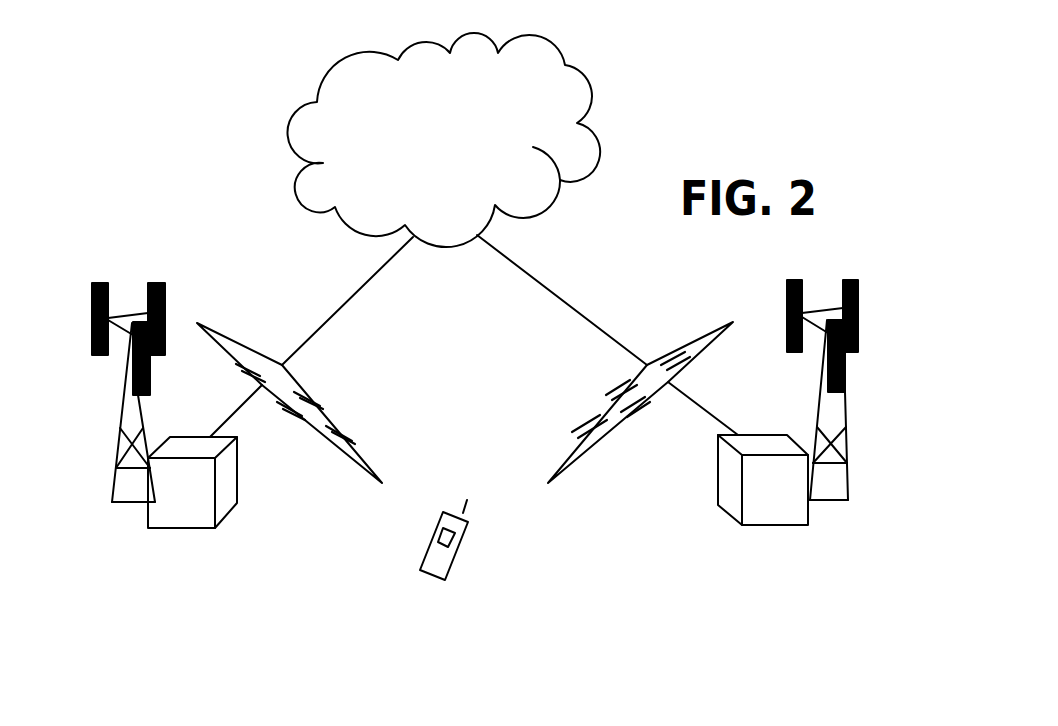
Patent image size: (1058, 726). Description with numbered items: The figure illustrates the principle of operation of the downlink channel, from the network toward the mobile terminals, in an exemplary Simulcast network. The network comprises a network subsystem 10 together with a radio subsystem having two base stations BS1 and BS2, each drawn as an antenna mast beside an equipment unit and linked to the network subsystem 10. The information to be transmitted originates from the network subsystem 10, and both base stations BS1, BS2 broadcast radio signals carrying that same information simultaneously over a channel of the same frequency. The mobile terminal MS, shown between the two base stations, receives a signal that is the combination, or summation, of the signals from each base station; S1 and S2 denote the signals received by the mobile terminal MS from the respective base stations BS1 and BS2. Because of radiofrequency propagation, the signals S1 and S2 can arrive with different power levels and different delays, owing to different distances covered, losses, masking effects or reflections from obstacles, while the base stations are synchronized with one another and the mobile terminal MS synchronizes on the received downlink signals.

The network subsystem 10 is at (590, 73).
The signal received from base station BS1 S1 is at (323, 413).
The signal received from base station BS2 S2 is at (607, 410).
The base station BS1 is at (178, 533).
The base station BS2 is at (773, 528).
The mobile terminal MS is at (457, 552).